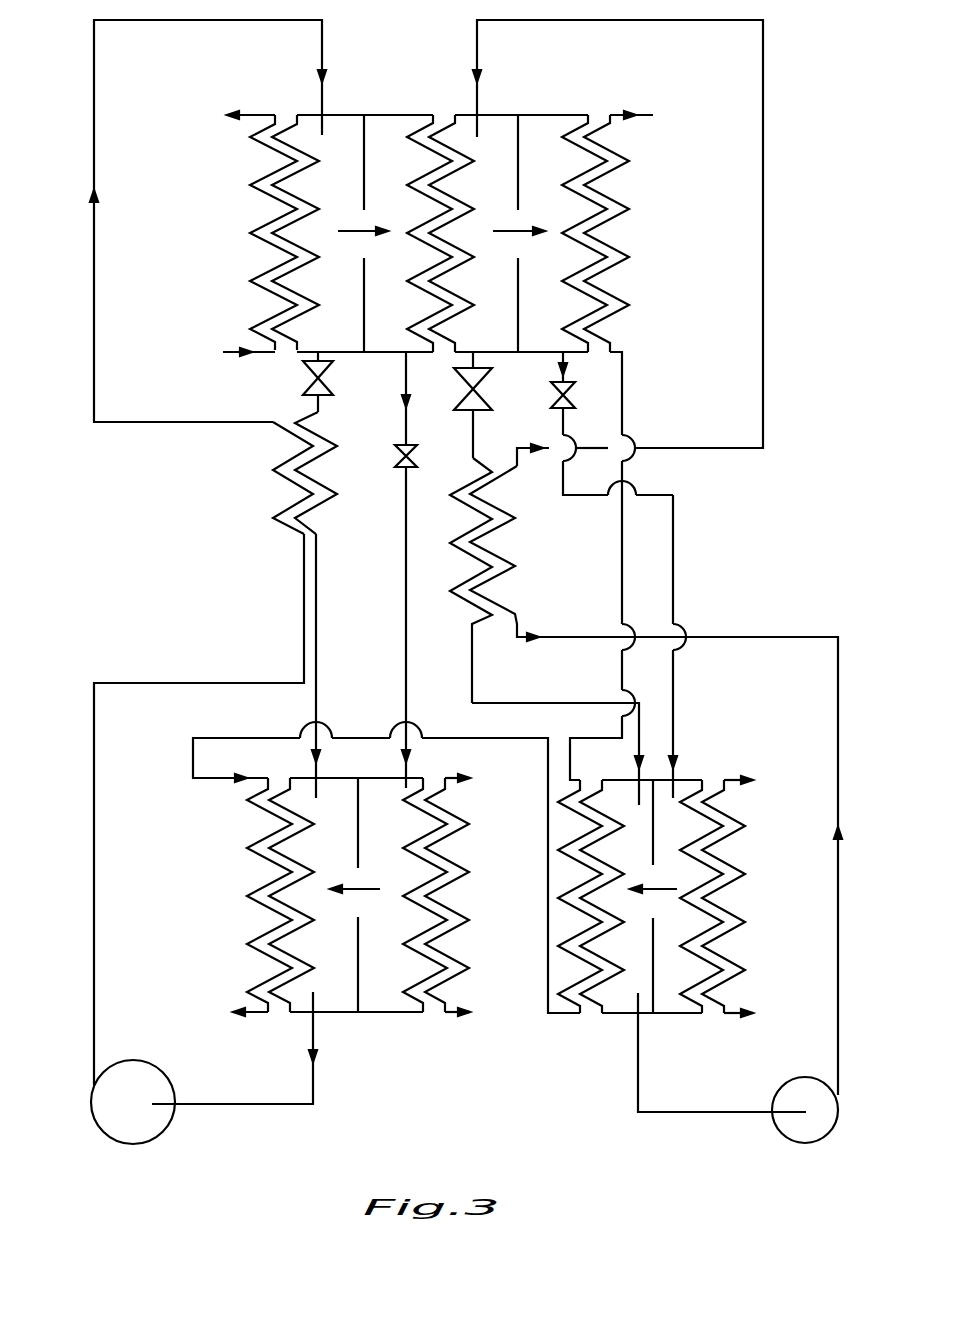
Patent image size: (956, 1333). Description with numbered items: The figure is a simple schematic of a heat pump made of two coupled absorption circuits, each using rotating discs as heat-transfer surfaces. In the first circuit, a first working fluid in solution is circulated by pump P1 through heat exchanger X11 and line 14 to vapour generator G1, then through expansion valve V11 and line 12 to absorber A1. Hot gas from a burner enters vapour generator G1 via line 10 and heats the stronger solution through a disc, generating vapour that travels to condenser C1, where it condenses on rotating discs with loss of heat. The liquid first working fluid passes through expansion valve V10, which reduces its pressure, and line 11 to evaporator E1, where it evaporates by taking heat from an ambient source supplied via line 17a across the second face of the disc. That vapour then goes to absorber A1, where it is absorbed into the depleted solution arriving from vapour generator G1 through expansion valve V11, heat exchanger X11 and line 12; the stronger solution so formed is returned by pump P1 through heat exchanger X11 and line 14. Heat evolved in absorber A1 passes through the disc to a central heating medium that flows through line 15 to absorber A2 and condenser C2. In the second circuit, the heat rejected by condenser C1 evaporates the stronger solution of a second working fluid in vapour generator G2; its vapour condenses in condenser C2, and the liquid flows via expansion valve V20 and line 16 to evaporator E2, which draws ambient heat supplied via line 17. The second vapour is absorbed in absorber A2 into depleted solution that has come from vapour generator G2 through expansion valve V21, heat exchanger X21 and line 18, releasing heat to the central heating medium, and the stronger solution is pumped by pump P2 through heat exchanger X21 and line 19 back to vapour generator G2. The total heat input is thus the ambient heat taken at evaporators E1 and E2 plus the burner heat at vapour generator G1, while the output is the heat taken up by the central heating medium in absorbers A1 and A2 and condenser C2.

The line 10 is at (266, 358).
The line 11 is at (410, 623).
The line 12 is at (317, 679).
The line 14 is at (95, 258).
The line 15 is at (193, 757).
The line 16 is at (673, 572).
The line 17 is at (732, 1018).
The line 17a is at (449, 1014).
The line 18 is at (510, 702).
The line 19 is at (725, 450).
The vapour generator G1 is at (291, 232).
The condenser C1 is at (370, 233).
The vapour generator G2 is at (444, 233).
The condenser C2 is at (561, 233).
The absorber A1 is at (275, 897).
The evaporator E1 is at (380, 893).
The absorber A2 is at (591, 896).
The evaporator E2 is at (677, 894).
The heat exchanger X11 is at (288, 473).
The heat exchanger X21 is at (489, 580).
The expansion valve V10 is at (421, 456).
The expansion valve V11 is at (331, 382).
The expansion valve V20 is at (612, 423).
The expansion valve V21 is at (487, 405).
The pump P1 is at (204, 1068).
The pump P2 is at (738, 1068).